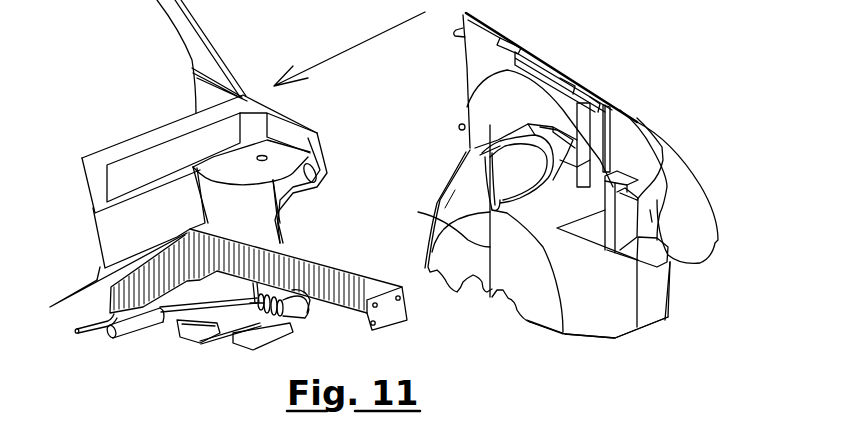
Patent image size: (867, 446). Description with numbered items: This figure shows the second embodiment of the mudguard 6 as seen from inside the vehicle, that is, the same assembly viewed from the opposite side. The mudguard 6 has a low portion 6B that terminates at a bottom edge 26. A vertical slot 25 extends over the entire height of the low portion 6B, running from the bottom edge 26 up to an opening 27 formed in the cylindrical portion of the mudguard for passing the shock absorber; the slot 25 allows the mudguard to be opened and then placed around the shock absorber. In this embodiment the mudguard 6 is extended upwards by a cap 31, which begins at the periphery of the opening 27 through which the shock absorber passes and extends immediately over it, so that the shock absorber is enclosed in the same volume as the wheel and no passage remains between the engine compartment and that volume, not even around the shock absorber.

The mudguard 6 is at (548, 209).
The low portion 6B is at (525, 272).
The vertical slot 25 is at (442, 200).
The bottom edge 26 is at (545, 328).
The opening 27 is at (528, 157).
The cap 31 is at (300, 207).